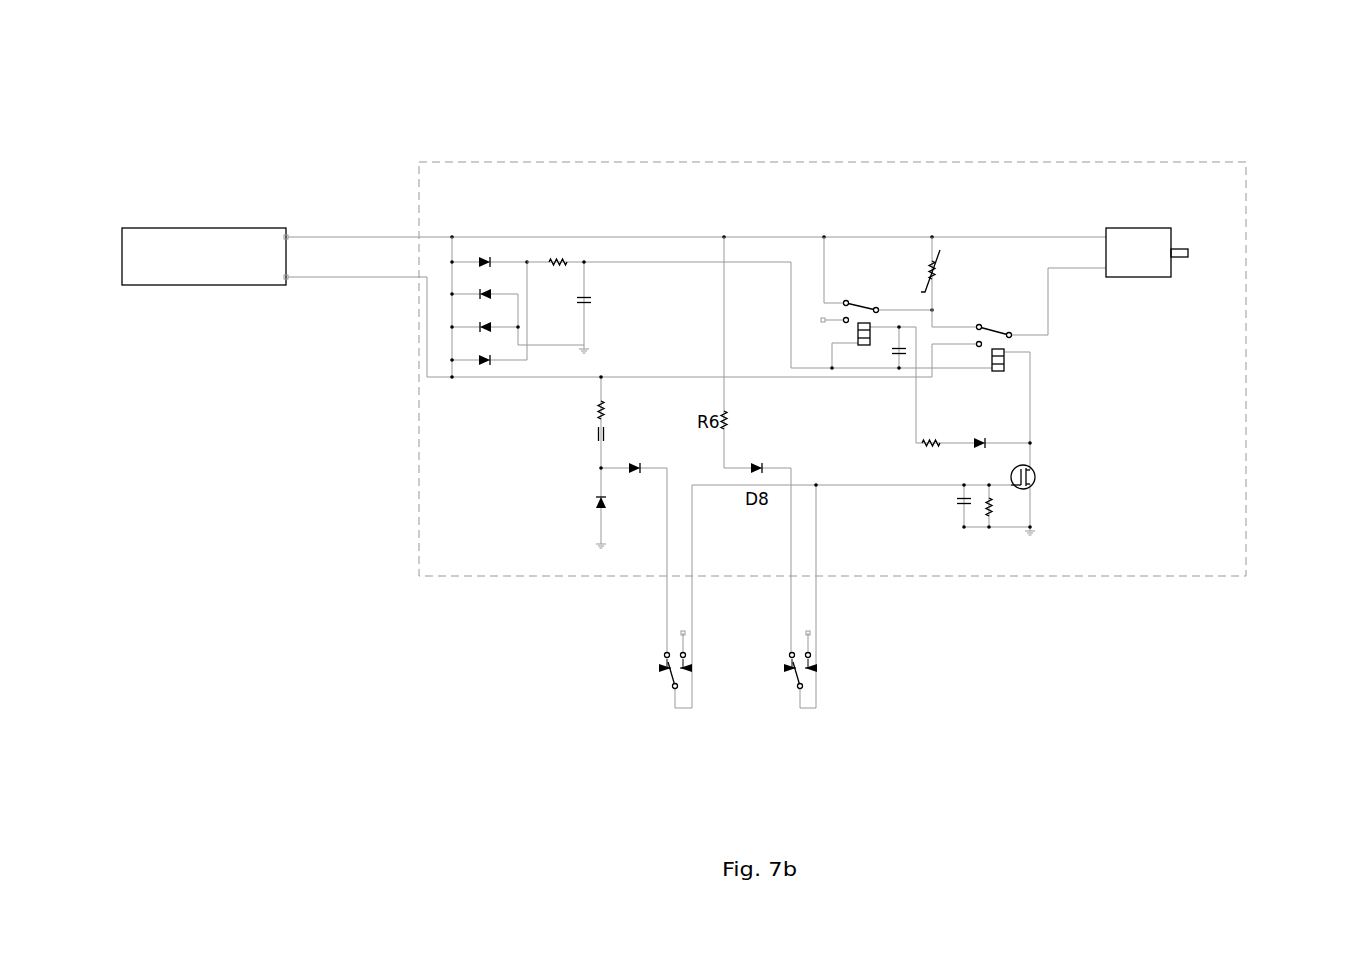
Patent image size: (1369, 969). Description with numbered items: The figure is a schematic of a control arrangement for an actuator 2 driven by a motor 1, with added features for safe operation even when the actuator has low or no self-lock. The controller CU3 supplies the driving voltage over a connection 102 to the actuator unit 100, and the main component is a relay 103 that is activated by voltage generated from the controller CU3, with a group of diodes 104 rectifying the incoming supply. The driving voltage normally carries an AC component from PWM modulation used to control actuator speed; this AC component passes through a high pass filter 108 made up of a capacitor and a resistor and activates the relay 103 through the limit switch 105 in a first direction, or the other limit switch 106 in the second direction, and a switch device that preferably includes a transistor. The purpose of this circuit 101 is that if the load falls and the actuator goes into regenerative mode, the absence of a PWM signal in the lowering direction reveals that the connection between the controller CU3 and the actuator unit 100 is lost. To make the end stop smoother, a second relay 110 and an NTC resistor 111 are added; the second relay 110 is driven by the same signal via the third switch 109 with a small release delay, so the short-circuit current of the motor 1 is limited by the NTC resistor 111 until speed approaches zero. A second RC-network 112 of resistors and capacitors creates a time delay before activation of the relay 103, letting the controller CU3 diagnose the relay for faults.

The motor 1 is at (1140, 222).
The actuator 2 is at (1185, 242).
The actuator unit 100 is at (962, 150).
The circuit 101 is at (723, 230).
The connection line to control unit 102 is at (355, 229).
The relay 103 is at (1035, 386).
The diode bridge 104 is at (472, 382).
The limit switch 105 is at (663, 684).
The limit switch 106 is at (788, 686).
The high pass filter 108 is at (553, 418).
The third switch 109 is at (1040, 488).
The second relay 110 is at (858, 266).
The NTC resistor 111 is at (961, 253).
The second RC-network 112 is at (557, 228).
The controller CU3 is at (182, 216).